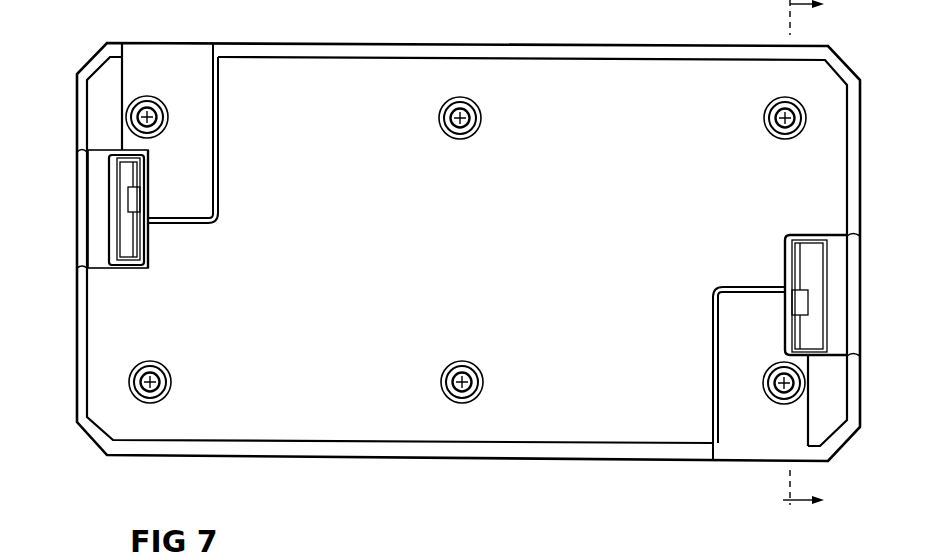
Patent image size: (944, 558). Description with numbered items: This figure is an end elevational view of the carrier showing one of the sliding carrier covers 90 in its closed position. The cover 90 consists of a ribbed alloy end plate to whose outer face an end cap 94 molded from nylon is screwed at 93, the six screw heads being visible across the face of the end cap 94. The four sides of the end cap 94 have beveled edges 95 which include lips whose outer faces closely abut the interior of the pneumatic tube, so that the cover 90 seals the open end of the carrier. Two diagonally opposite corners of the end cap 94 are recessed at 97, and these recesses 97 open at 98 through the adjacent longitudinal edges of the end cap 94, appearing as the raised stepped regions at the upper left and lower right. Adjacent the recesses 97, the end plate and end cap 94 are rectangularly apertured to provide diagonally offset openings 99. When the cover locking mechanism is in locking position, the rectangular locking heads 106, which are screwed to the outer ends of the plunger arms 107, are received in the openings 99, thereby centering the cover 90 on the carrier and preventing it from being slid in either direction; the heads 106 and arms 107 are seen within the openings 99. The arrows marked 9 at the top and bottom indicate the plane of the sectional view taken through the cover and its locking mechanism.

The carrier cover 90 is at (451, 258).
The screws 93 is at (160, 108).
The end cap 94 is at (640, 68).
The beveled edges 95 is at (407, 43).
The recesses 97 is at (218, 167).
The recess openings 98 is at (193, 43).
The openings 99 is at (97, 272).
The locking heads 106 is at (128, 172).
The plunger arms 107 is at (135, 202).
The section line 9 is at (803, 252).